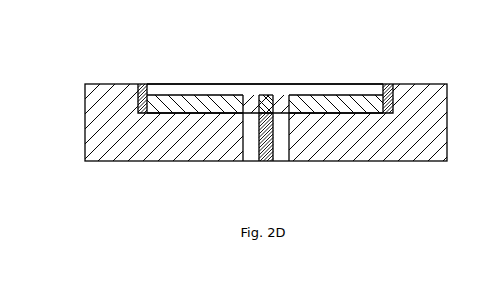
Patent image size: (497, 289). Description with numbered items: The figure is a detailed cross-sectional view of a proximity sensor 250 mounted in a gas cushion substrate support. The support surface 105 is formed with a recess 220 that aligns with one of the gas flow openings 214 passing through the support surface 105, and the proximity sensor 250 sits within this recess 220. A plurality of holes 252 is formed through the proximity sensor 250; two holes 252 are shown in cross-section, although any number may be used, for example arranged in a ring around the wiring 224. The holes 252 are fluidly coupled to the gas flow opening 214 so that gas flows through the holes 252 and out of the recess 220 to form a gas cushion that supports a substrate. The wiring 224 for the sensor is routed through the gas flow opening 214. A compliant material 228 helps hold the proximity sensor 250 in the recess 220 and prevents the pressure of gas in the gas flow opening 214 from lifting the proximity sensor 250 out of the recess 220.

The support surface 105 is at (85, 132).
The recess 220 is at (295, 84).
The proximity sensor 250 is at (170, 97).
The holes 252 is at (252, 96).
The compliant material 228 is at (386, 100).
The wiring 224 is at (267, 161).
The gas flow opening 214 is at (250, 153).